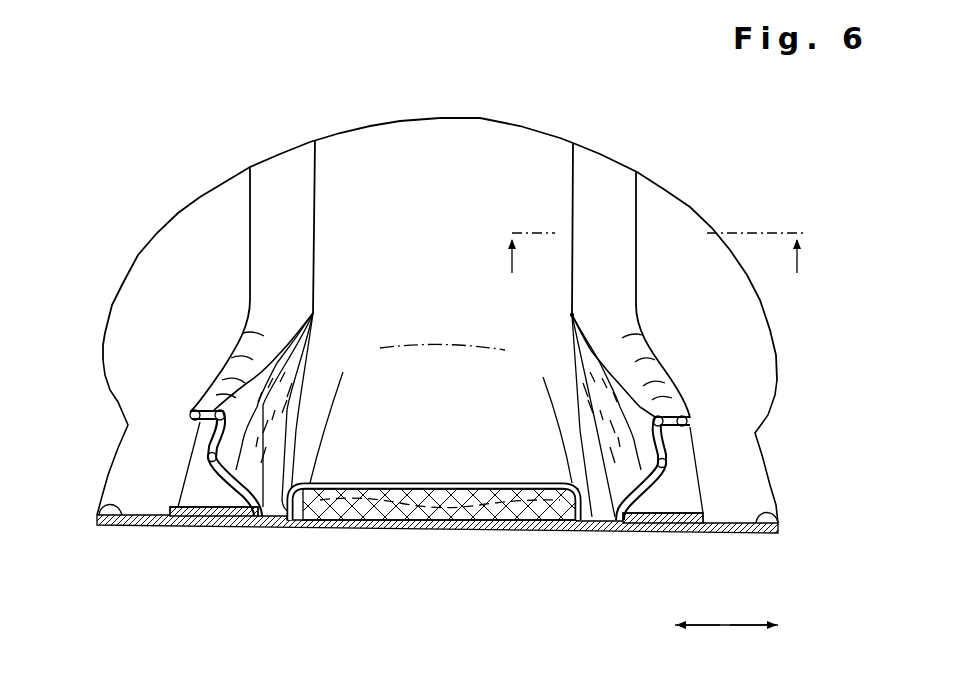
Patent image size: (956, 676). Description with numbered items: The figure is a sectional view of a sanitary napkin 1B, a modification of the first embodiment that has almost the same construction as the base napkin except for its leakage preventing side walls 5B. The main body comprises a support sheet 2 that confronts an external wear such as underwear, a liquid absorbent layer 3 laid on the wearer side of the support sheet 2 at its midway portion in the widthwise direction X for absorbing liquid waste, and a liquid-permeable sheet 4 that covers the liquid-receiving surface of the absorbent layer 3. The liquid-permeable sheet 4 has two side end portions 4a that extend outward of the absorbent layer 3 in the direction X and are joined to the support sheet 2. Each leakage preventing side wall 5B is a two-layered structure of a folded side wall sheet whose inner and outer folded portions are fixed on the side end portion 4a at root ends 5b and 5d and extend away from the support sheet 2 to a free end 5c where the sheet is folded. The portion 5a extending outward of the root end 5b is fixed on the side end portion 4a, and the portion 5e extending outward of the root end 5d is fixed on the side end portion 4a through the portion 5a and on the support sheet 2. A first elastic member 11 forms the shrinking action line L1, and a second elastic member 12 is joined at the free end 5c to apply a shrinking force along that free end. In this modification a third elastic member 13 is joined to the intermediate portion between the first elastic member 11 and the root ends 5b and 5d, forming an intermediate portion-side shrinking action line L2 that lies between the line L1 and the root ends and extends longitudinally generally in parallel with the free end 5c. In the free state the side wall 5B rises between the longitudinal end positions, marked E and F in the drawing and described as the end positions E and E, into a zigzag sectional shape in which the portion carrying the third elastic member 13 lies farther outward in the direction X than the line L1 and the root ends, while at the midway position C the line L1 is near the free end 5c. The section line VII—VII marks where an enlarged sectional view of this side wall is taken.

The sanitary napkin 1B is at (700, 164).
The support sheet 2 is at (393, 532).
The liquid absorbent layer 3 is at (484, 540).
The liquid-permeable sheet 4 is at (425, 485).
The side end portion 4a is at (240, 527).
The leakage preventing side wall 5B is at (236, 314).
The portion extending outwardly of the root end 5a is at (198, 527).
The root end 5b is at (439, 415).
The free end 5c is at (440, 424).
The root end 5d is at (439, 467).
The portion extending outwardly of the root end 5e is at (118, 503).
The first elastic member 11 is at (442, 391).
The second elastic member 12 is at (128, 425).
The third elastic member 13 is at (439, 461).
The midway position C is at (441, 393).
The end position E is at (320, 315).
The apex point F is at (565, 318).
The shrinking action line L1 is at (441, 340).
The intermediate portion-side shrinking action line L2 is at (437, 427).
The widthwise direction X is at (726, 640).
The line VII— VII is at (655, 264).